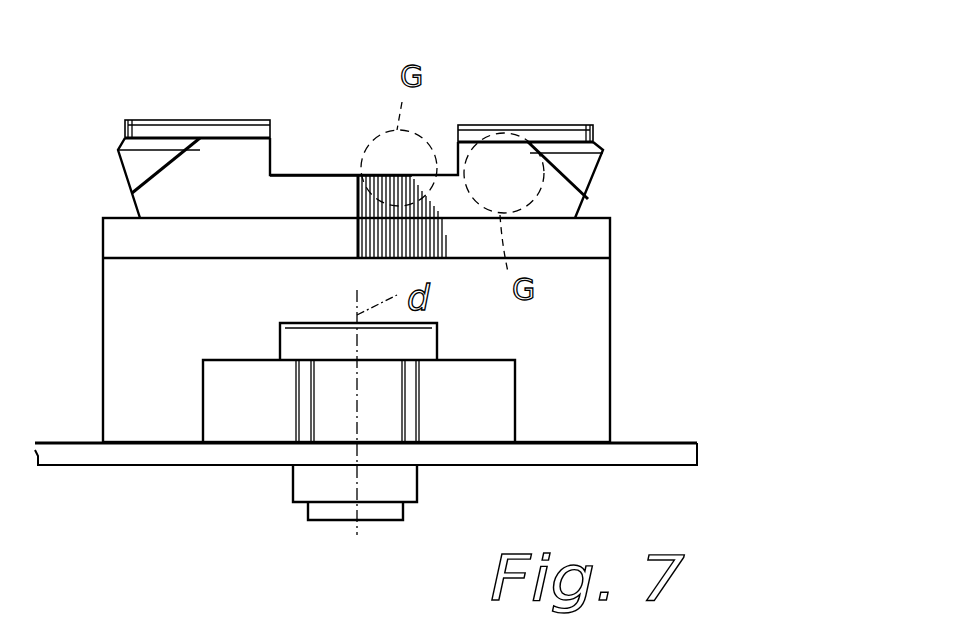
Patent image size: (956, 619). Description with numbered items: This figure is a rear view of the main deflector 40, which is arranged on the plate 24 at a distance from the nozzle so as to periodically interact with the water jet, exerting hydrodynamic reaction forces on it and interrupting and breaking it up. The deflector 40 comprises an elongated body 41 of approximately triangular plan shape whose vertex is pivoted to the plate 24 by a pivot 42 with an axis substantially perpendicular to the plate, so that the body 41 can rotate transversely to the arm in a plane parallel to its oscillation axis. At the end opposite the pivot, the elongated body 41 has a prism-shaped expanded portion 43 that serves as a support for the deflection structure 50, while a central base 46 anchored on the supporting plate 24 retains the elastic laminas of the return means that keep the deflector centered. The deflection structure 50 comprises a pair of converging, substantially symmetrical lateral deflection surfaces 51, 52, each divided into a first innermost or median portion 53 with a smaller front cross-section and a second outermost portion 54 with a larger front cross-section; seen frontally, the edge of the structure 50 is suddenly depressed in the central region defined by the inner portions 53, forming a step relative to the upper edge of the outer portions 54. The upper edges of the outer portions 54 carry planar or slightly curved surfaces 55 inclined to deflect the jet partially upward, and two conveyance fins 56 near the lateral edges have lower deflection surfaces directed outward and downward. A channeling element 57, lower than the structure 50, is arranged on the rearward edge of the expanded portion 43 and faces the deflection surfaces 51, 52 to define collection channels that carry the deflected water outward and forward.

The plate 24 is at (132, 453).
The main deflector 40 is at (746, 117).
The elongated body 41 is at (500, 425).
The pivot 42 is at (295, 340).
The prism-shaped expanded portion 43 is at (597, 378).
The central base 46 is at (310, 482).
The deflection structure 50 is at (536, 46).
The lateral deflection surface 51 is at (312, 172).
The lateral deflection surface 52 is at (443, 153).
The first innermost or median portion 53 is at (332, 197).
The second outermost portion 54 is at (220, 150).
The planar or slightly curved surface 55 is at (143, 117).
The conveyance fin 56 is at (128, 162).
The channeling element 57 is at (593, 245).